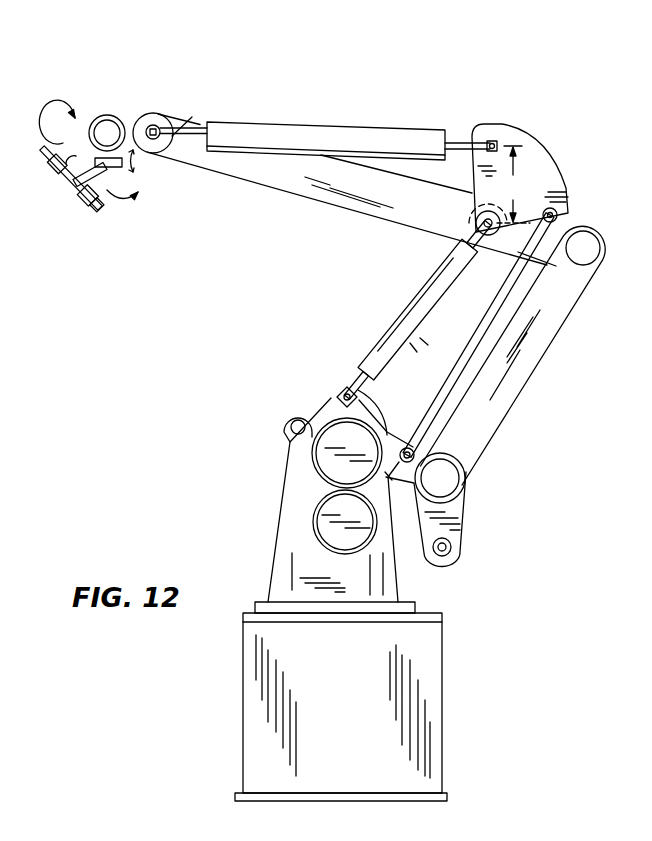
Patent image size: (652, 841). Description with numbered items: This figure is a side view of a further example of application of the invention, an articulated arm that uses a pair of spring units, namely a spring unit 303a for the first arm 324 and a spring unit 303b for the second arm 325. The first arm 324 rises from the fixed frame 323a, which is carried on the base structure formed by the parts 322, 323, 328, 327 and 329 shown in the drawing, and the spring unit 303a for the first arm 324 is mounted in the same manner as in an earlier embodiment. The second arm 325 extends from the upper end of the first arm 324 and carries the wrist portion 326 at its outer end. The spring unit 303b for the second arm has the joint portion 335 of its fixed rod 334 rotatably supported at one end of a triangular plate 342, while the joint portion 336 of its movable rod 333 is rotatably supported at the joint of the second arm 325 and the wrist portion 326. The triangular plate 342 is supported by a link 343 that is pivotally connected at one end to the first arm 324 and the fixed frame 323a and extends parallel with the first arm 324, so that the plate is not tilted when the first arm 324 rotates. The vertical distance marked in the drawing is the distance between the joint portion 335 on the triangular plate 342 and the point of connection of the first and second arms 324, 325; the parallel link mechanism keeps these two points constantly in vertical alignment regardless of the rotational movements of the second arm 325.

The wrist portion 326 is at (138, 106).
The movable rod 333 is at (190, 124).
The spring unit for the second arm 303b is at (343, 102).
The fixed rod 334 is at (462, 137).
The joint portion of the fixed rod 335 is at (495, 140).
The triangular plate 342 is at (538, 165).
The joint portion of the movable rod 336 is at (160, 136).
The second arm 325 is at (328, 193).
The spring unit for the first arm 303a is at (408, 298).
The first arm 324 is at (417, 352).
The fixed frame 323a is at (362, 386).
The column lug 328 is at (296, 455).
The link 343 is at (506, 305).
The lower arm 327 is at (537, 345).
The pivot bracket 329 is at (463, 520).
The column base plate 323 is at (412, 608).
The base housing 322 is at (428, 680).